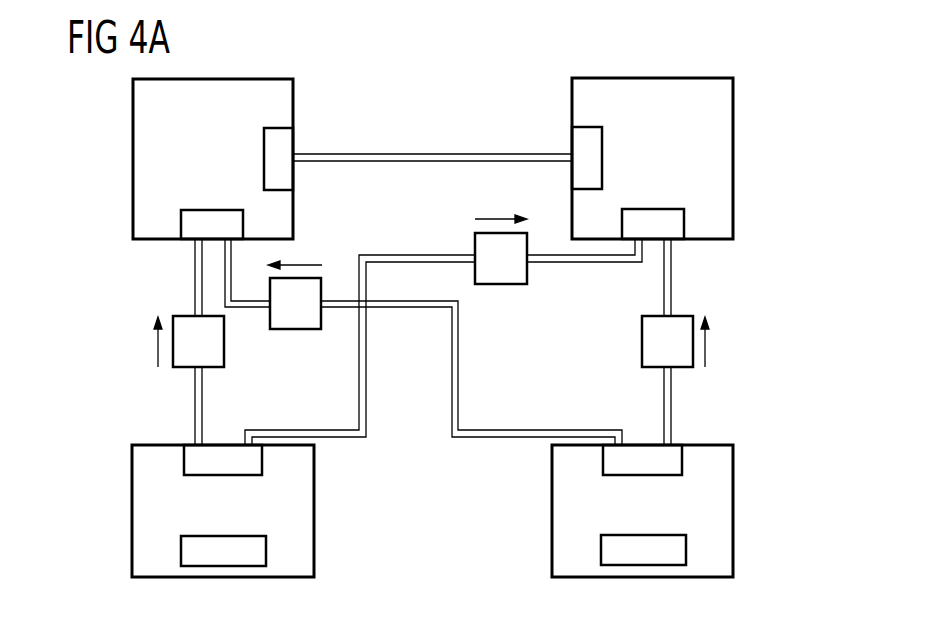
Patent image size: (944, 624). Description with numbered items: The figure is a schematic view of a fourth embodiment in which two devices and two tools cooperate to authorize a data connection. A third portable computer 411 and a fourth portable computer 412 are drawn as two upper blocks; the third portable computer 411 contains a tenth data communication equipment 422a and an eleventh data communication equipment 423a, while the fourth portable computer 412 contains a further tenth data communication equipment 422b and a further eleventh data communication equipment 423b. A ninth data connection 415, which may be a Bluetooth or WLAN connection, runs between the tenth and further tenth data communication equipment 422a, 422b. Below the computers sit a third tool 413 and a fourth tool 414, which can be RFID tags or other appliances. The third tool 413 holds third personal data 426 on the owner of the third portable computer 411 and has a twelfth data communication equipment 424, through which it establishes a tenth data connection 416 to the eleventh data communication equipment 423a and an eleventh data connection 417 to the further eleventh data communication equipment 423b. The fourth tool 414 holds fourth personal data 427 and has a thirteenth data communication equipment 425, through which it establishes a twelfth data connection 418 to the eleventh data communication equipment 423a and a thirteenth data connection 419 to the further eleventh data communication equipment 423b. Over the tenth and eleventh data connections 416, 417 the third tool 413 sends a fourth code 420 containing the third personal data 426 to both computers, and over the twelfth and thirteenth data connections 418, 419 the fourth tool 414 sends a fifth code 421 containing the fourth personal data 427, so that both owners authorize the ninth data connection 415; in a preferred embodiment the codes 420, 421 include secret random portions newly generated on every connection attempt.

The third portable computer 411 is at (133, 160).
The fourth portable computer 412 is at (733, 160).
The third tool 413 is at (314, 512).
The fourth tool 414 is at (552, 512).
The ninth data connection 415 is at (433, 153).
The tenth data connection 416 is at (194, 407).
The eleventh data connection 417 is at (367, 372).
The twelfth data connection 418 is at (532, 428).
The thirteenth data connection 419 is at (672, 407).
The fourth code 420 is at (182, 313).
The fifth code 421 is at (293, 331).
The tenth data communication equipment 422a is at (270, 137).
The further tenth data communication equipment 422b is at (597, 140).
The eleventh data communication equipment 423a is at (213, 218).
The further eleventh data communication equipment 423b is at (653, 217).
The twelfth data communication equipment 424 is at (223, 453).
The thirteenth data communication equipment 425 is at (642, 453).
The third personal data 426 is at (223, 535).
The fourth personal data 427 is at (642, 535).